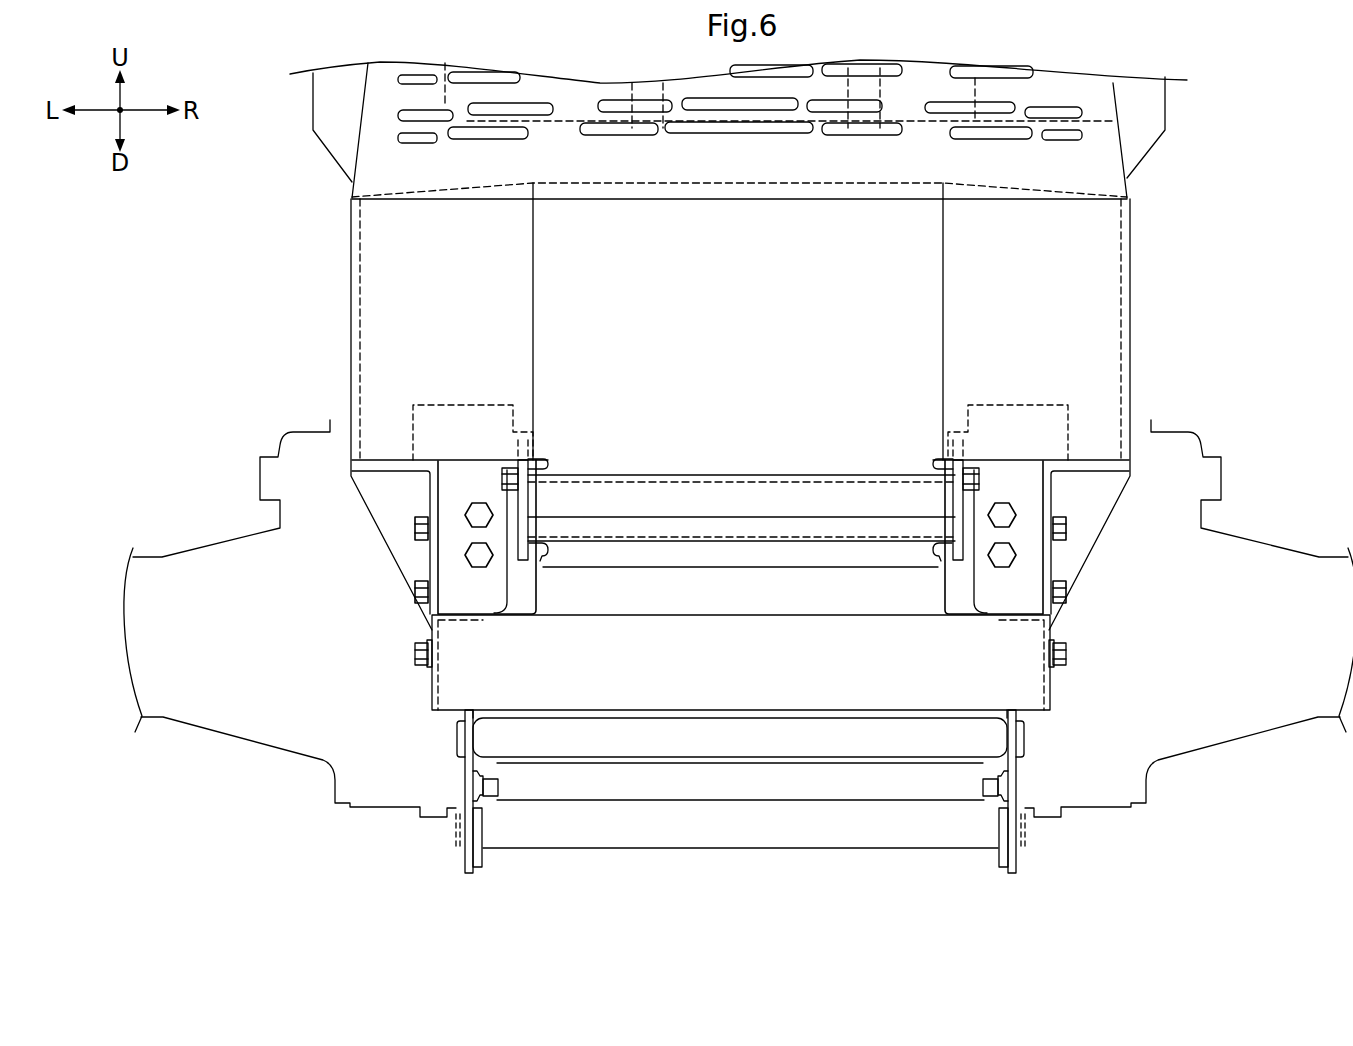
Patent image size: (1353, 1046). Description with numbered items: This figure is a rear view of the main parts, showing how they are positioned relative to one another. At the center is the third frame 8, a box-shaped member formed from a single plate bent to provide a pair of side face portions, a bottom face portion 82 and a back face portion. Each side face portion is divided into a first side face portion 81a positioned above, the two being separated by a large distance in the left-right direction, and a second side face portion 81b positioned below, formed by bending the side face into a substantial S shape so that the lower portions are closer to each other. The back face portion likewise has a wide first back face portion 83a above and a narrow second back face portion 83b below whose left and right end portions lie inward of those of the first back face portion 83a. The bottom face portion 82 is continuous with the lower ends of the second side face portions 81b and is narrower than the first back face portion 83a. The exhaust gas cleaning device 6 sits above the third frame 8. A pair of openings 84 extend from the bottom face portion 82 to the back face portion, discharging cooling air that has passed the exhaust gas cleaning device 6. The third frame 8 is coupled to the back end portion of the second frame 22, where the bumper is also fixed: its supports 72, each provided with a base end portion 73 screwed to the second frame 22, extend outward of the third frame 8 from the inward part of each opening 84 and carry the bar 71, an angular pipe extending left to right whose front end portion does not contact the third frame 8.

The exhaust gas cleaning device 6 is at (563, 121).
The third frame 8 is at (1134, 214).
The first side face portion 81a is at (352, 318).
The second side face portion 81b is at (430, 557).
The bottom face portion 82 is at (737, 670).
The first back face portion 83a is at (778, 250).
The second back face portion 83b is at (787, 553).
The opening 84 is at (518, 600).
The bar 71 is at (727, 497).
The support 72 is at (953, 503).
The base end portion 73 is at (428, 590).
The second frame 22 is at (460, 860).